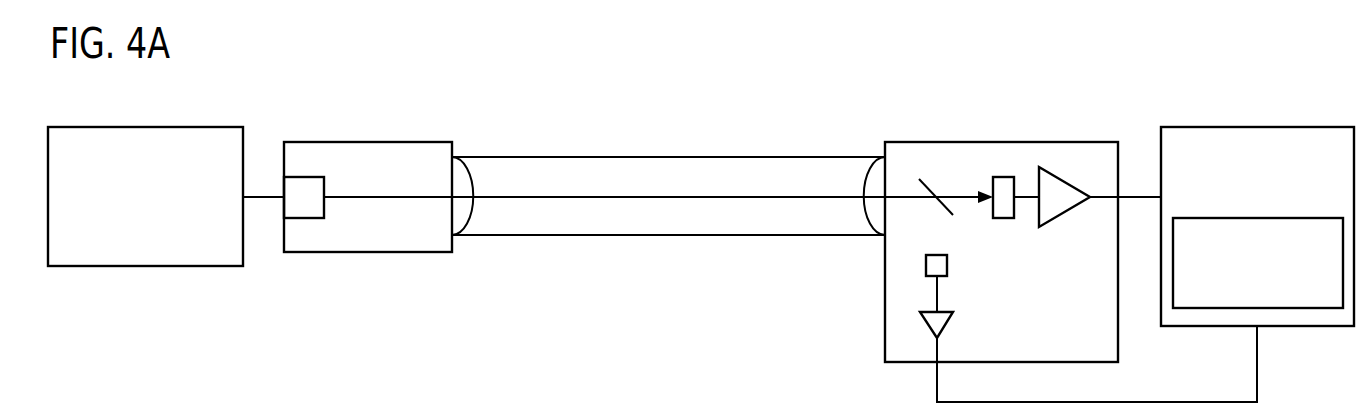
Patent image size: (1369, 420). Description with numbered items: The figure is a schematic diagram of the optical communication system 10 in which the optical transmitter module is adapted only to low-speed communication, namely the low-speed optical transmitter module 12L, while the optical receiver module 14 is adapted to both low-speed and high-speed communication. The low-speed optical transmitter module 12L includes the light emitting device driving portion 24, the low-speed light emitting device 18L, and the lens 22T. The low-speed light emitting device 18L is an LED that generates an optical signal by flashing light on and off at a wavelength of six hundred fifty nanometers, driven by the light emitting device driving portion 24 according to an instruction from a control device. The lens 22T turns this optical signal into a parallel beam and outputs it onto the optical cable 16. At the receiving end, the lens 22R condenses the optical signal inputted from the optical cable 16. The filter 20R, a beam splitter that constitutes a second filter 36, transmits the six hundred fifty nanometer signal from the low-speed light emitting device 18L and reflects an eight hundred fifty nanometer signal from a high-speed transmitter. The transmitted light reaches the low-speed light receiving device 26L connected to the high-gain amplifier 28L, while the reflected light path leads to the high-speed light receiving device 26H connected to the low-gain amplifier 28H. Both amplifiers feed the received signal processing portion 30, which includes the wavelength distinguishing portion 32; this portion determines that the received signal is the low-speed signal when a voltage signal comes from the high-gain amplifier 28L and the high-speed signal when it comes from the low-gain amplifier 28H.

The optical communication system 10 is at (248, 63).
The light emitting device driving portion 24 is at (118, 127).
The low-speed optical transmitter module 12L is at (449, 122).
The low-speed light emitting device 18L is at (304, 177).
The lens 22T is at (470, 212).
The optical cable 16 is at (709, 157).
The lens 22R is at (864, 210).
The filter 20R is at (1021, 226).
The second filter 36 is at (932, 188).
The low-speed light receiving device 26L is at (1003, 177).
The high-gain amplifier 28L is at (1057, 173).
The high-speed light receiving device 26H is at (948, 264).
The low-gain amplifier 28H is at (942, 322).
The optical receiver module 14 is at (1283, 104).
The received signal processing portion 30 is at (1202, 127).
The wavelength distinguishing portion 32 is at (1306, 310).